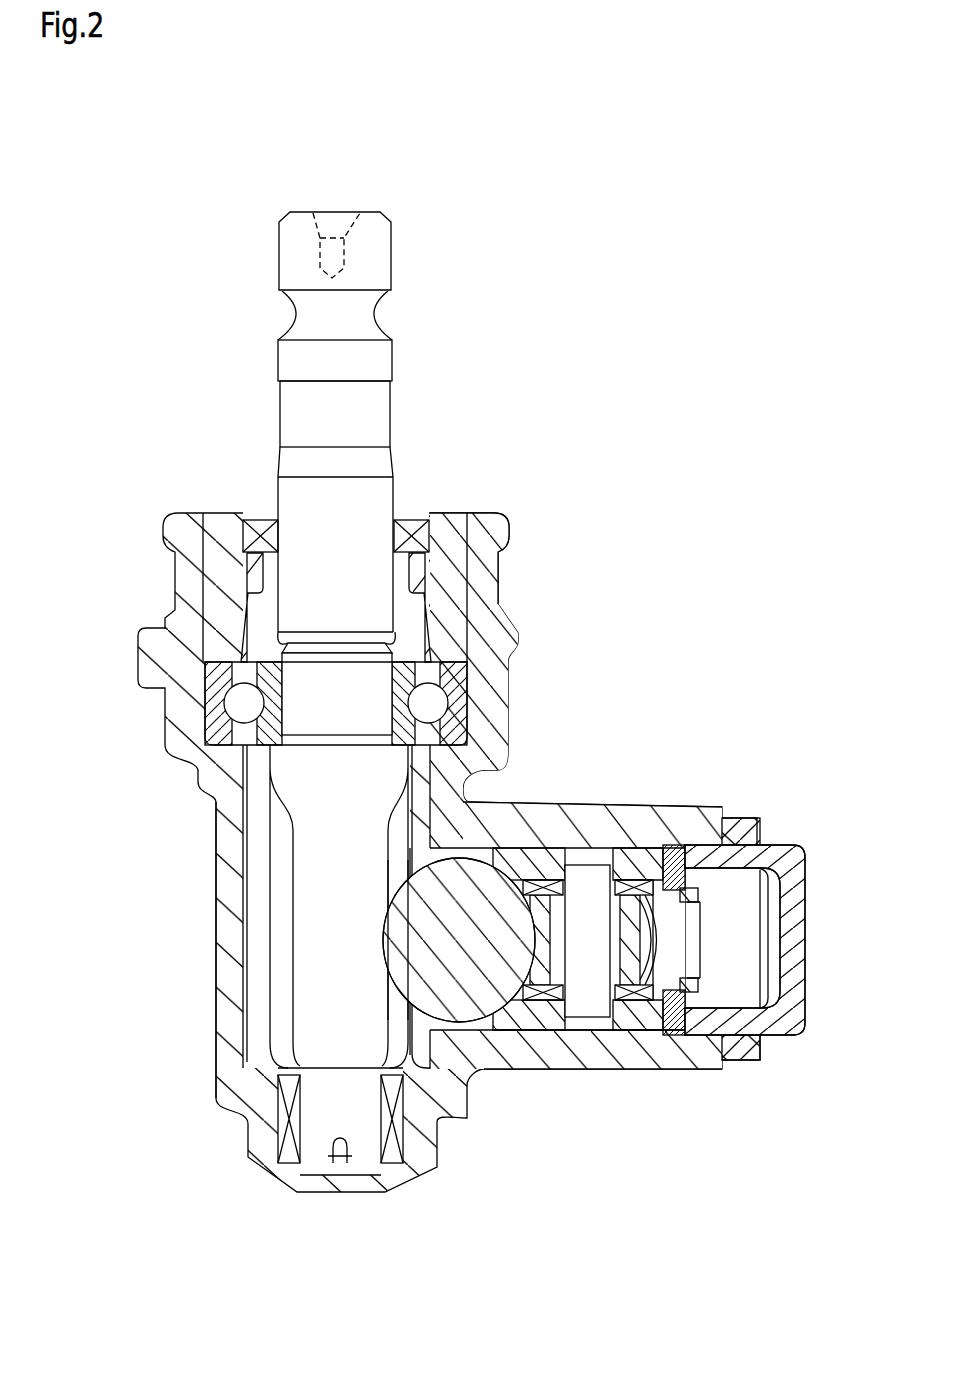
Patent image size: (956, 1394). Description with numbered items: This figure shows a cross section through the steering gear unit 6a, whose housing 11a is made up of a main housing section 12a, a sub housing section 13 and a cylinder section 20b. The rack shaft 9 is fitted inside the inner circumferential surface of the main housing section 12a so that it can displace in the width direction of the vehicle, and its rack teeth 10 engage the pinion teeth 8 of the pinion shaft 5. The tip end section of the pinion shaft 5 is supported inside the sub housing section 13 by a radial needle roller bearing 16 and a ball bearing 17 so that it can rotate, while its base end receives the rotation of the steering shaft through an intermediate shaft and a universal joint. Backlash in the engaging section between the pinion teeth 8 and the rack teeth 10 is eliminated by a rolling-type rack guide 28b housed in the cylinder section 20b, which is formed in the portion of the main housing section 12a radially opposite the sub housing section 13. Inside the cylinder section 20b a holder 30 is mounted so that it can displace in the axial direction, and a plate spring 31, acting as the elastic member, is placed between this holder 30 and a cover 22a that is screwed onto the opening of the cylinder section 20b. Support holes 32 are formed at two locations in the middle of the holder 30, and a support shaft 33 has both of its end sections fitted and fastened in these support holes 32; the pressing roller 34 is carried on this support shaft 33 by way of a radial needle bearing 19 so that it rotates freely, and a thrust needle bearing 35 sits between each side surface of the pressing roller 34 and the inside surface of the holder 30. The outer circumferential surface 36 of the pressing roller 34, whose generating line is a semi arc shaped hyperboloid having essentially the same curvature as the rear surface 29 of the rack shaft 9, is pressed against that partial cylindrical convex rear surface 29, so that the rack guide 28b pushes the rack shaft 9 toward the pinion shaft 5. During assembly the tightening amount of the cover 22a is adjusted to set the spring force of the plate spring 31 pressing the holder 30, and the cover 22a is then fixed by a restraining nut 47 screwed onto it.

The pinion shaft 5 is at (372, 247).
The radial needle bearing 19 is at (422, 522).
The housing 11a is at (500, 640).
The ball bearing 17 is at (432, 704).
The steering gear unit 6a is at (189, 908).
The rack teeth 10 is at (400, 942).
The pinion teeth 8 is at (277, 978).
The sub housing section 13 is at (238, 1030).
The radial needle roller bearing 16 is at (290, 1158).
The main housing section 12a is at (415, 1123).
The rack shaft 9 is at (443, 1012).
The rear surface 29 is at (472, 1030).
The thrust needle bearing 35 is at (539, 1002).
The support shaft 33 is at (590, 1014).
The pressing roller 34 is at (636, 1005).
The support holes 32 is at (627, 1002).
The outer circumferential surface 36 is at (630, 877).
The holder 30 is at (648, 877).
The plate spring 31 is at (678, 848).
The rolling-type rack guide 28b is at (734, 816).
The cylinder section 20b is at (695, 1062).
The nut 47 is at (740, 1062).
The cover 22a is at (795, 1038).